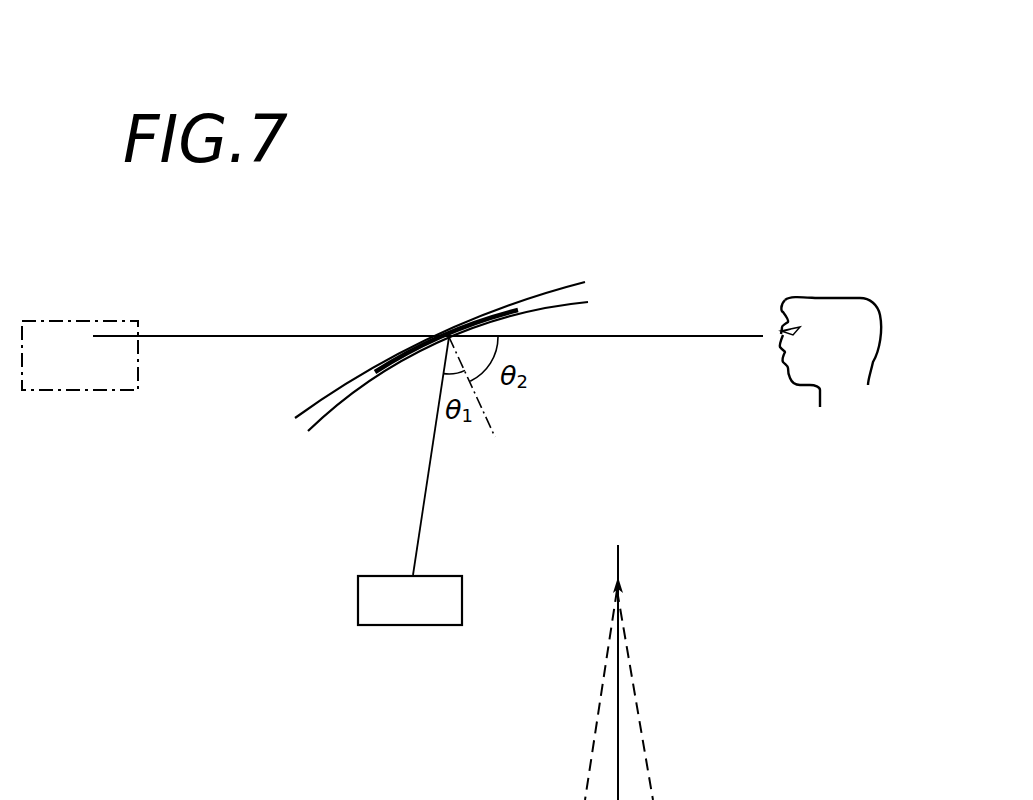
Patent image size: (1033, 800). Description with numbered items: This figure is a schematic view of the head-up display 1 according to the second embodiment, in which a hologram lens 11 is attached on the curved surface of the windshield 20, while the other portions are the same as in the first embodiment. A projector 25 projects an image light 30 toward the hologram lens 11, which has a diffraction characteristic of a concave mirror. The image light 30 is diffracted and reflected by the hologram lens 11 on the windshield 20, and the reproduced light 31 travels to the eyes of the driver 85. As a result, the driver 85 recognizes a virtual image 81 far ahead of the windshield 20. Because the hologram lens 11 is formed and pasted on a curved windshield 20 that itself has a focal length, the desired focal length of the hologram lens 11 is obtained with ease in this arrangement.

The head-up display 1 is at (464, 150).
The hologram lens 11 is at (488, 300).
The windshield 20 is at (562, 285).
The projector 25 is at (411, 627).
The image light 30 is at (417, 515).
The reproduced light 31 is at (680, 334).
The virtual image 81 is at (82, 320).
The driver 85 is at (838, 298).